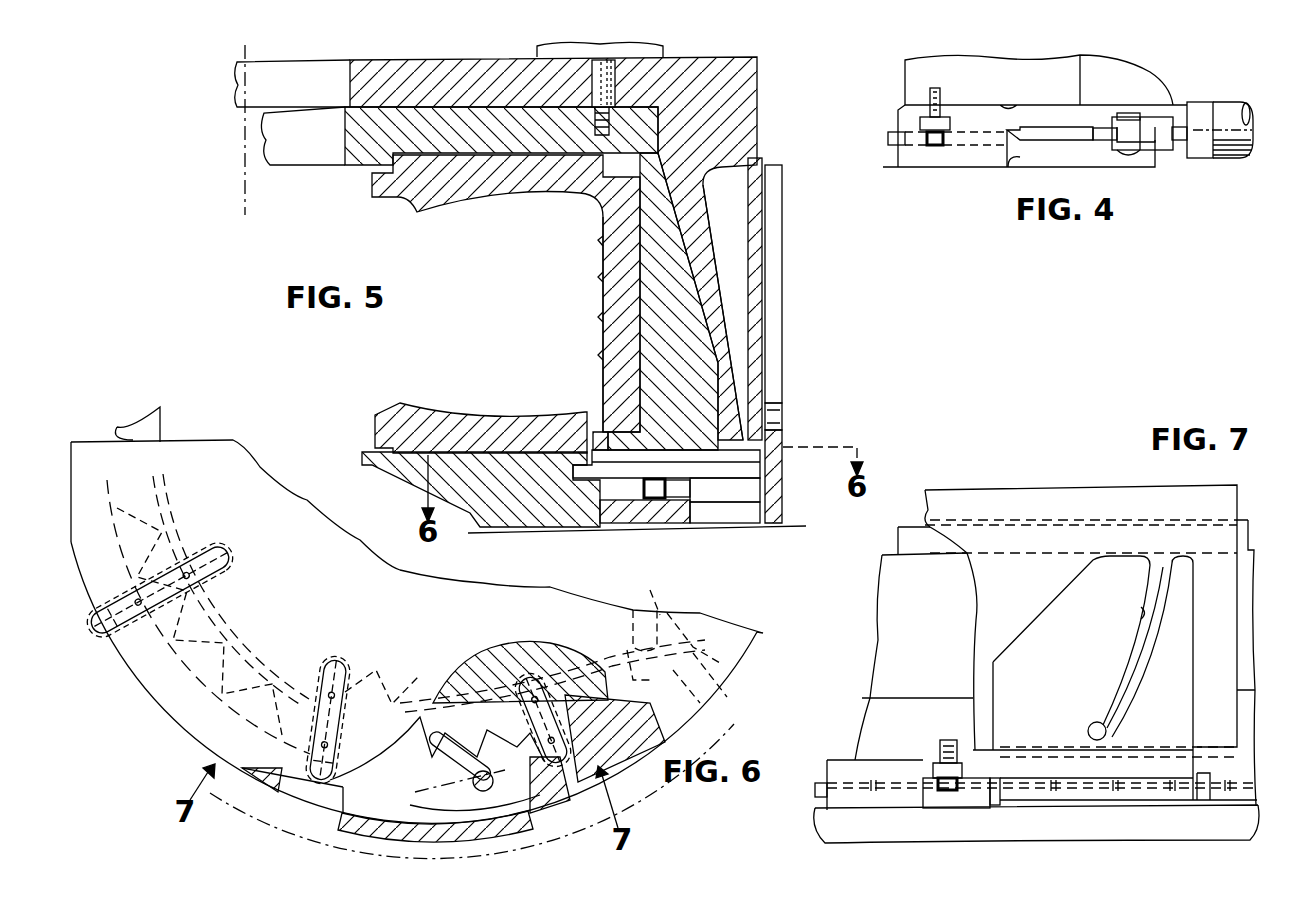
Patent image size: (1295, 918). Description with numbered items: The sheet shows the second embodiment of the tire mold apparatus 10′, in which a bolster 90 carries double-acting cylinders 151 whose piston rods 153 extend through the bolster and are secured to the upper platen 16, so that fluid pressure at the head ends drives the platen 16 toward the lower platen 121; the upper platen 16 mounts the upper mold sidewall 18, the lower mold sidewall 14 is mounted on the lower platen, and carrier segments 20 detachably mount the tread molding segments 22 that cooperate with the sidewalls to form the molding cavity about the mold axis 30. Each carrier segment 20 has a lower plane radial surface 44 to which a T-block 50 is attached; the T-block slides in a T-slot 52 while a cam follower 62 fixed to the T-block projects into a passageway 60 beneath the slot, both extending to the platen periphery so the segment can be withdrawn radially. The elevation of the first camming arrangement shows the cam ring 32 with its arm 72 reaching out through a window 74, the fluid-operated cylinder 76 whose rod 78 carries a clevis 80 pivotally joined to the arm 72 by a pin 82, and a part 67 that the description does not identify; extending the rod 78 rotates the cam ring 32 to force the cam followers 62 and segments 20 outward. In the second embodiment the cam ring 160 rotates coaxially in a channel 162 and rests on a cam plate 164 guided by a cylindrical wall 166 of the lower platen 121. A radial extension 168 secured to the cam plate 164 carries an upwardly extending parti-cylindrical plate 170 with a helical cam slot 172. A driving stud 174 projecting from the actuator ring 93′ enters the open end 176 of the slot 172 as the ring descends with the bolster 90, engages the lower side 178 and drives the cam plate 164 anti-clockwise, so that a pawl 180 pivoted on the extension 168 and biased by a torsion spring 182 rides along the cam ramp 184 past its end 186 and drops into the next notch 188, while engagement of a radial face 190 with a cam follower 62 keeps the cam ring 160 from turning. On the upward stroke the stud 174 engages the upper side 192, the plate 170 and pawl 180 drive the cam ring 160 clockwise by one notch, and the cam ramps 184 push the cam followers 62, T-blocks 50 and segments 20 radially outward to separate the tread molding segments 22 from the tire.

In FIG. 5, the apparatus 10′ is at (756, 113).
In FIG. 5, the lower mold sidewall 14 is at (415, 405).
In FIG. 5, the upper platen 16 is at (345, 139).
In FIG. 7, the upper platen 16 is at (898, 544).
In FIG. 5, the upper mold sidewall 18 is at (372, 184).
In FIG. 5, the carrier segments 20 is at (640, 298).
In FIG. 4, the carrier segments 20 is at (953, 66).
In FIG. 7, the carrier segments 20 is at (882, 592).
In FIG. 5, the tread molding segments 22 is at (601, 259).
In FIG. 5, the axis 30 is at (240, 75).
In FIG. 4, the cam ring 32 is at (889, 137).
In FIG. 4, the lower plane radial surface 44 is at (1017, 105).
In FIG. 5, the T-block 50 is at (760, 460).
In FIG. 4, the T-block 50 is at (928, 113).
In FIG. 7, the T-block 50 is at (945, 758).
In FIG. 6, the T-block 50 is at (225, 562).
In FIG. 5, the T-slots 52 is at (700, 483).
In FIG. 4, the T-slots 52 is at (920, 125).
In FIG. 7, the T-slots 52 is at (933, 770).
In FIG. 6, the T-slots 52 is at (108, 624).
In FIG. 5, the passageway 60 is at (742, 492).
In FIG. 4, the passageway 60 is at (932, 147).
In FIG. 6, the passageway 60 is at (610, 766).
In FIG. 5, the cam follower 62 is at (656, 478).
In FIG. 4, the cam follower 62 is at (945, 138).
In FIG. 7, the cam follower 62 is at (958, 787).
In FIG. 6, the cam follower 62 is at (122, 585).
In FIG. 4, the link bar 67 is at (1033, 137).
In FIG. 4, the arm 72 is at (1113, 133).
In FIG. 4, the window 74 is at (1018, 160).
In FIG. 4, the fluid-operated cylinder 76 is at (1238, 158).
In FIG. 4, the piston rod 78 is at (1180, 141).
In FIG. 4, the clevis 80 is at (1150, 120).
In FIG. 4, the pin 82 is at (1130, 115).
In FIG. 5, the bolster 90 is at (350, 86).
In FIG. 7, the bolster 90 is at (1017, 498).
In FIG. 5, the actuator ring 93′ is at (752, 385).
In FIG. 7, the actuator ring 93′ is at (975, 620).
In FIG. 5, the lower platen 121 is at (362, 456).
In FIG. 7, the lower platen 121 is at (835, 765).
In FIG. 6, the lower platen 121 is at (730, 625).
In FIG. 5, the double-acting cylinders 151 is at (665, 48).
In FIG. 5, the piston rods 153 is at (616, 82).
In FIG. 5, the cam ring 160 is at (566, 493).
In FIG. 7, the cam ring 160 is at (818, 790).
In FIG. 6, the cam ring 160 is at (137, 427).
In FIG. 6, the channel 162 is at (200, 465).
In FIG. 5, the cam plate 164 is at (655, 520).
In FIG. 7, the cam plate 164 is at (950, 800).
In FIG. 6, the cam plate 164 is at (200, 745).
In FIG. 5, the cylindrical wall 166 is at (603, 515).
In FIG. 5, the radial extension 168 is at (737, 512).
In FIG. 7, the radial extension 168 is at (995, 795).
In FIG. 6, the radial extension 168 is at (343, 800).
In FIG. 5, the parti-cylindrical plate 170 is at (759, 251).
In FIG. 7, the parti-cylindrical plate 170 is at (1060, 598).
In FIG. 6, the parti-cylindrical plate 170 is at (345, 838).
In FIG. 5, the cam slot 172 is at (776, 286).
In FIG. 7, the cam slot 172 is at (1138, 643).
In FIG. 5, the driving stud 174 is at (783, 411).
In FIG. 7, the driving stud 174 is at (1088, 730).
In FIG. 7, the open end 176 is at (1167, 565).
In FIG. 7, the lower side 178 is at (1133, 688).
In FIG. 6, the pawl 180 is at (450, 790).
In FIG. 6, the torsion spring 182 is at (478, 792).
In FIG. 6, the cam ramp 184 is at (185, 500).
In FIG. 6, the end 186 is at (505, 745).
In FIG. 6, the notch 188 is at (658, 612).
In FIG. 6, the radial face 190 is at (730, 692).
In FIG. 7, the upper side 192 is at (1141, 612).